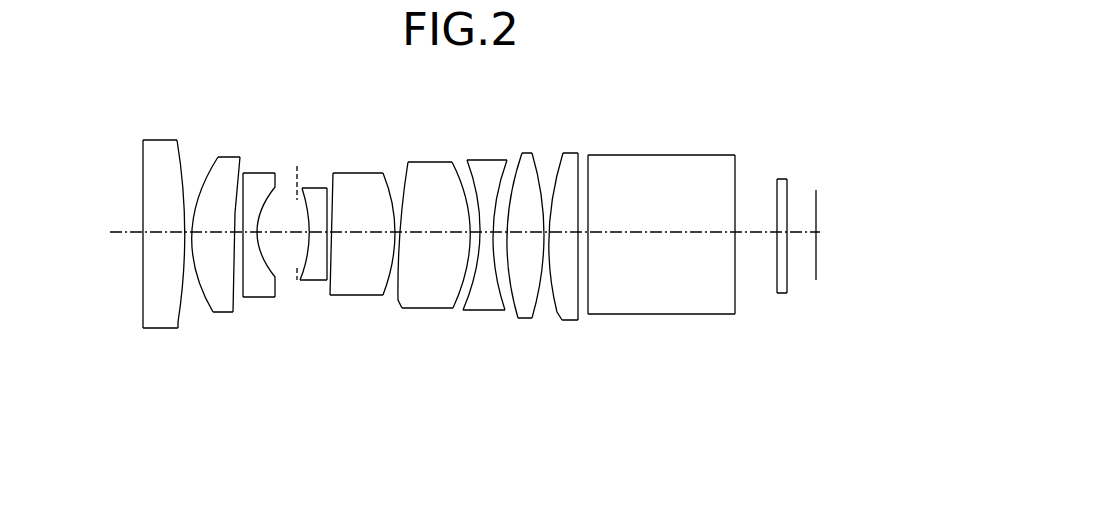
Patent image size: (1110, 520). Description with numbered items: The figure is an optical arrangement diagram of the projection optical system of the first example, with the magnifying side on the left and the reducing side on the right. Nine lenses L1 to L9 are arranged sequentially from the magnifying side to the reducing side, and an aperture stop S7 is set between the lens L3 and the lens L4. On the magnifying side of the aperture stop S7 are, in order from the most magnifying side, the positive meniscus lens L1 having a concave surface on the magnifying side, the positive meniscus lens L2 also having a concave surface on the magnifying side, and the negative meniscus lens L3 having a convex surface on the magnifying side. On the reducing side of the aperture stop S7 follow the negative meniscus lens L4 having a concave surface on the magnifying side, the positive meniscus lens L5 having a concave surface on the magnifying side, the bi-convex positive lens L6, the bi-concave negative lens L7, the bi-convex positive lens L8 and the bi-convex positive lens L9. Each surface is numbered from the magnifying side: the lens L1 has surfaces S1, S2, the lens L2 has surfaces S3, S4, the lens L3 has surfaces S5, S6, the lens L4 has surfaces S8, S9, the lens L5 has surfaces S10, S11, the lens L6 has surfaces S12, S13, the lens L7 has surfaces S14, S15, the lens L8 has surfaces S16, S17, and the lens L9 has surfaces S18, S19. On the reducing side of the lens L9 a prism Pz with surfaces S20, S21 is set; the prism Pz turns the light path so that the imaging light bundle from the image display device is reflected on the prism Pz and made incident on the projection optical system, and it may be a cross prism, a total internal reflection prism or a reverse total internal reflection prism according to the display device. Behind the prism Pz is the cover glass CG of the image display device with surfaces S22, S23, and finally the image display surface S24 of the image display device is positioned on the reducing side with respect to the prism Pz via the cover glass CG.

The positive meniscus lens L1 is at (160, 152).
The positive meniscus lens L2 is at (223, 167).
The negative meniscus lens L3 is at (265, 182).
The negative meniscus lens L4 is at (317, 197).
The positive meniscus lens L5 is at (358, 187).
The bi-convex positive lens L6 is at (432, 180).
The bi-concave negative lens L7 is at (483, 173).
The bi-convex positive lens L8 is at (527, 167).
The bi-convex positive lens L9 is at (568, 170).
The prism Pz is at (653, 168).
The cover glass CG is at (782, 177).
The first surface S1 is at (143, 315).
The second surface S2 is at (178, 322).
The third surface S3 is at (207, 303).
The fourth surface S4 is at (235, 312).
The fifth surface S5 is at (243, 295).
The sixth surface S6 is at (277, 287).
The aperture stop surface S7 is at (290, 216).
The eighth surface S8 is at (300, 280).
The ninth surface S9 is at (327, 280).
The tenth surface S10 is at (330, 297).
The eleventh surface S11 is at (390, 297).
The twelfth surface S12 is at (400, 303).
The thirteenth surface S13 is at (457, 310).
The fourteenth surface S14 is at (460, 313).
The fifteenth surface S15 is at (508, 302).
The sixteenth surface S16 is at (518, 310).
The seventeenth surface S17 is at (533, 312).
The eighteenth surface S18 is at (558, 317).
The nineteenth surface S19 is at (575, 315).
The twentieth surface S20 is at (590, 315).
The twenty-first surface S21 is at (735, 315).
The twenty-second surface S22 is at (777, 293).
The twenty-third surface S23 is at (787, 293).
The image display surface S24 is at (816, 285).